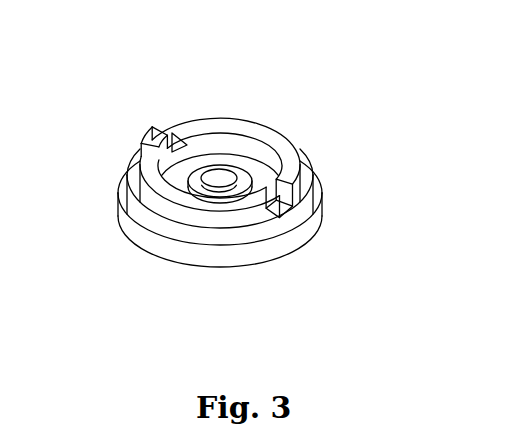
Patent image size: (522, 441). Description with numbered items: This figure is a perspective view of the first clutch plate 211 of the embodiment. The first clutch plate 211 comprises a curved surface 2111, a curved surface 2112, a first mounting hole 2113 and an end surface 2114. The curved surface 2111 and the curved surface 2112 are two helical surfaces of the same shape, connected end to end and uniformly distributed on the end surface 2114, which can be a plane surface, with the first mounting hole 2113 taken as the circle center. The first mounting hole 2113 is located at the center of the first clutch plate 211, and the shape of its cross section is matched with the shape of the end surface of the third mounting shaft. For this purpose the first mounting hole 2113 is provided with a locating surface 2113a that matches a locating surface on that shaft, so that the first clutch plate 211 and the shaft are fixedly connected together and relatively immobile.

The first clutch plate 211 is at (227, 97).
The curved surface 2111 is at (257, 128).
The curved surface 2112 is at (152, 143).
The first mounting hole 2113 is at (228, 180).
The locating surface 2113a is at (213, 185).
The end surface 2114 is at (307, 212).